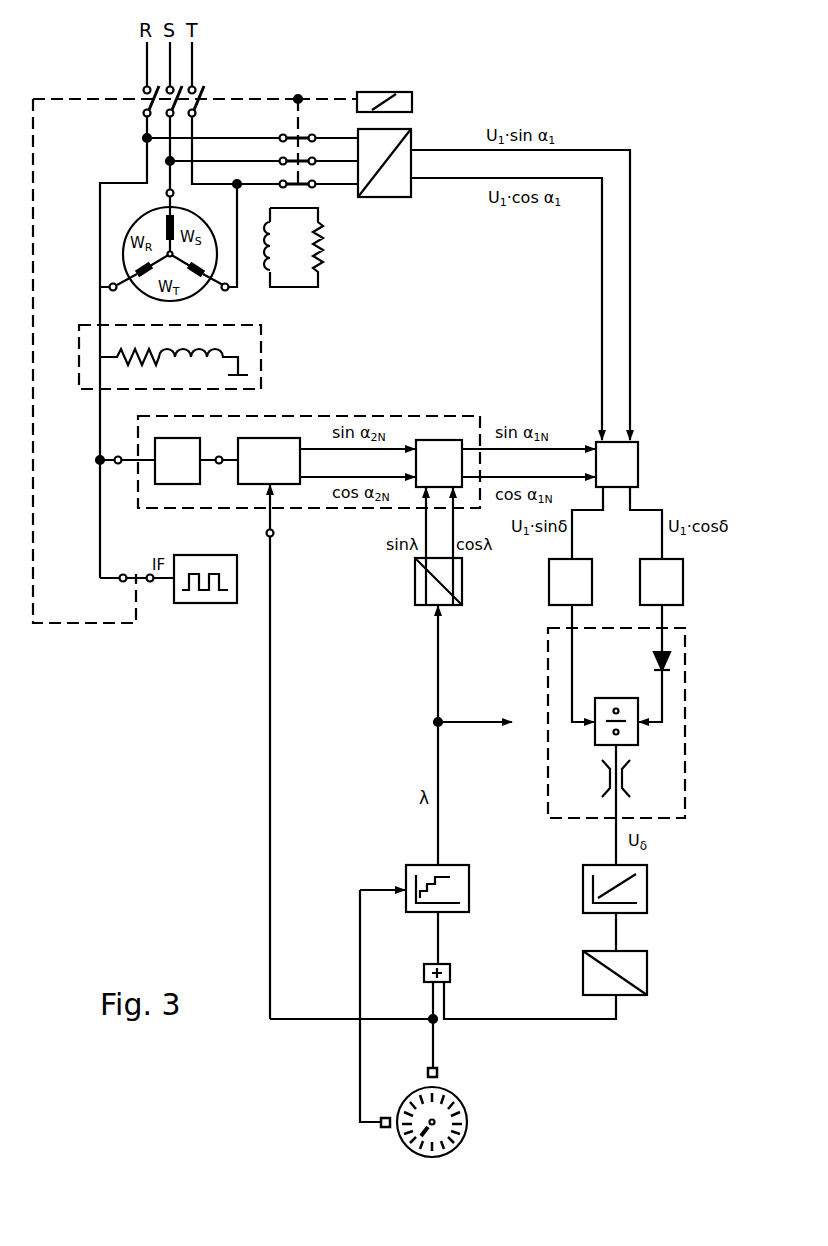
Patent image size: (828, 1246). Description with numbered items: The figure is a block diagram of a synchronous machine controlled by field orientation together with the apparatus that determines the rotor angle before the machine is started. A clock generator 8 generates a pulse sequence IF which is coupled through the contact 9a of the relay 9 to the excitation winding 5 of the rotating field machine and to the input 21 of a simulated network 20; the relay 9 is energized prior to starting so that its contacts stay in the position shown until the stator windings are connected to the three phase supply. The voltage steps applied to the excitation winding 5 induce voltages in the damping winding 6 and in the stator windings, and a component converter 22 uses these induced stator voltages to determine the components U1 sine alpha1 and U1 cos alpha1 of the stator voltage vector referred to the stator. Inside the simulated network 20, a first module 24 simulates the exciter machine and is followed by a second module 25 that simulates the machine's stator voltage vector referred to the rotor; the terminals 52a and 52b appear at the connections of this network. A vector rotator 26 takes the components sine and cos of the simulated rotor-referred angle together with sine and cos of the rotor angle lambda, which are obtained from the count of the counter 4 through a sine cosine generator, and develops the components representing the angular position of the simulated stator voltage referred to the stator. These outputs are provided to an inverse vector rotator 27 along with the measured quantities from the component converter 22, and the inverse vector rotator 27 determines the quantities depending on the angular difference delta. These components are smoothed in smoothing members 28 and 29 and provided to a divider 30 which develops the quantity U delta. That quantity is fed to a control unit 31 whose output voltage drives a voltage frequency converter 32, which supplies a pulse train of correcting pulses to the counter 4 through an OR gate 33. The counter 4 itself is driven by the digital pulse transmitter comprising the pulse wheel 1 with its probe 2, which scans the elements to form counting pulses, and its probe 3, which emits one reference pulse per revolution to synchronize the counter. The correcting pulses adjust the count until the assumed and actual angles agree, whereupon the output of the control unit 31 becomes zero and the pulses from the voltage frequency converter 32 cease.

The pulse wheel 1 is at (467, 1122).
The probe 2 is at (437, 1072).
The probe 3 is at (386, 1127).
The counter 4 is at (469, 889).
The excitation winding 5 is at (262, 360).
The damping winding 6 is at (292, 287).
The clock generator 8 is at (204, 603).
The relay 9 is at (386, 92).
The relay contact 9a is at (130, 570).
The simulated network 20 is at (136, 501).
The input of simulated network 21 is at (118, 456).
The component converter 22 is at (383, 197).
The first module 24 is at (177, 484).
The second module 25 is at (265, 484).
The vector rotator 26 is at (442, 455).
The inverse vector rotator 27 is at (638, 463).
The smoothing member 28 is at (549, 582).
The smoothing member 29 is at (683, 582).
The divider 30 is at (687, 762).
The control unit 31 is at (647, 890).
The voltage frequency converter 32 is at (647, 973).
The OR gate 33 is at (452, 973).
The terminal 52a is at (219, 464).
The terminal 52b is at (274, 533).